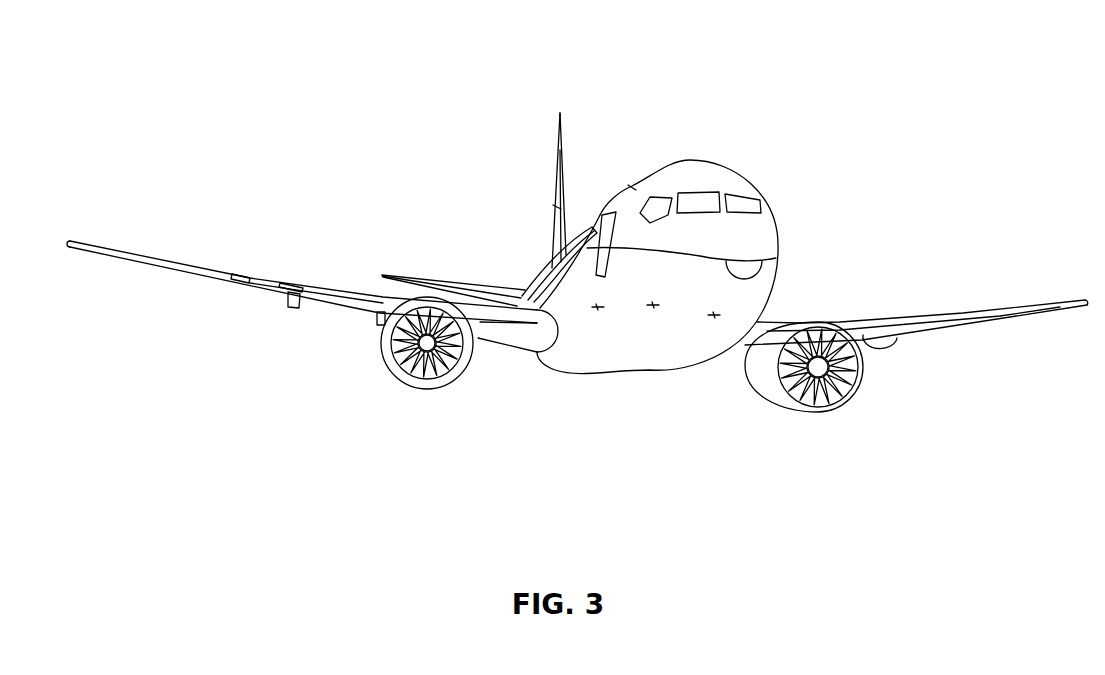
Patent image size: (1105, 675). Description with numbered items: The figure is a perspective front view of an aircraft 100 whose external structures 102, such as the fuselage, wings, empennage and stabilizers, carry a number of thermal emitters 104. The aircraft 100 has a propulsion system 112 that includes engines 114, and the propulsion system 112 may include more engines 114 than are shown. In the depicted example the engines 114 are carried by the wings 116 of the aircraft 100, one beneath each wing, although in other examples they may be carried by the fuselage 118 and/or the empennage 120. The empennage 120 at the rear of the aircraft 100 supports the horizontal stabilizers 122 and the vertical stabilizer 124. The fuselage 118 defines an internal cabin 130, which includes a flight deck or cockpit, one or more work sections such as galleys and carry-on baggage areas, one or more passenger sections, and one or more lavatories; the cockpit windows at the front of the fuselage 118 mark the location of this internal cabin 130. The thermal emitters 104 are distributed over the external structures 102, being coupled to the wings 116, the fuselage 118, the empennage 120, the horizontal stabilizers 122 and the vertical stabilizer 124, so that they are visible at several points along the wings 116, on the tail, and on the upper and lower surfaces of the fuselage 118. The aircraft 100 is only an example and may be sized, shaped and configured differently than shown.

The aircraft 100 is at (327, 63).
The external structures 102 is at (470, 285).
The thermal emitters 104 is at (632, 187).
The propulsion system 112 is at (900, 403).
The engines 114 is at (423, 393).
The wings 116 is at (205, 265).
The fuselage 118 is at (775, 223).
The empennage 120 is at (547, 258).
The horizontal stabilizers 122 is at (418, 277).
The vertical stabilizer 124 is at (557, 153).
The internal cabin 130 is at (703, 200).